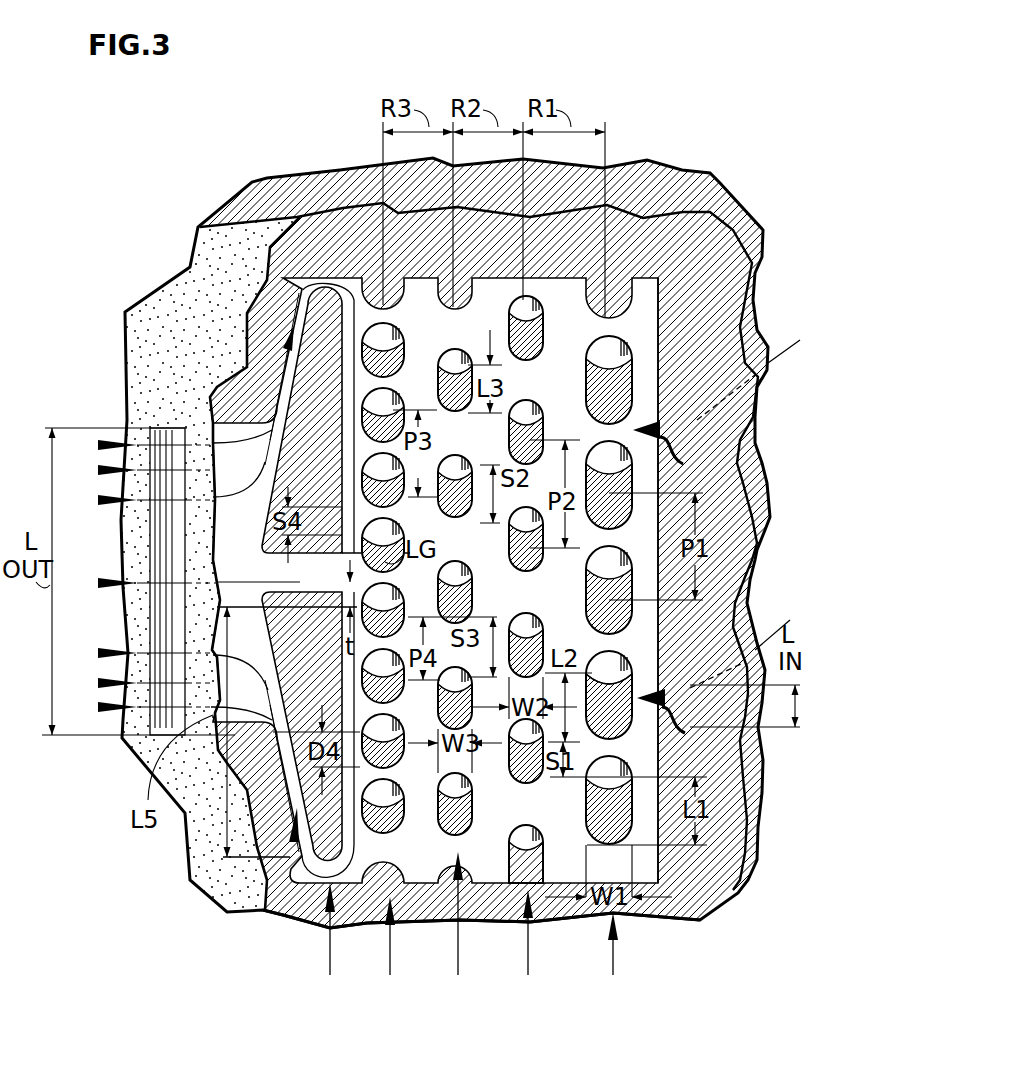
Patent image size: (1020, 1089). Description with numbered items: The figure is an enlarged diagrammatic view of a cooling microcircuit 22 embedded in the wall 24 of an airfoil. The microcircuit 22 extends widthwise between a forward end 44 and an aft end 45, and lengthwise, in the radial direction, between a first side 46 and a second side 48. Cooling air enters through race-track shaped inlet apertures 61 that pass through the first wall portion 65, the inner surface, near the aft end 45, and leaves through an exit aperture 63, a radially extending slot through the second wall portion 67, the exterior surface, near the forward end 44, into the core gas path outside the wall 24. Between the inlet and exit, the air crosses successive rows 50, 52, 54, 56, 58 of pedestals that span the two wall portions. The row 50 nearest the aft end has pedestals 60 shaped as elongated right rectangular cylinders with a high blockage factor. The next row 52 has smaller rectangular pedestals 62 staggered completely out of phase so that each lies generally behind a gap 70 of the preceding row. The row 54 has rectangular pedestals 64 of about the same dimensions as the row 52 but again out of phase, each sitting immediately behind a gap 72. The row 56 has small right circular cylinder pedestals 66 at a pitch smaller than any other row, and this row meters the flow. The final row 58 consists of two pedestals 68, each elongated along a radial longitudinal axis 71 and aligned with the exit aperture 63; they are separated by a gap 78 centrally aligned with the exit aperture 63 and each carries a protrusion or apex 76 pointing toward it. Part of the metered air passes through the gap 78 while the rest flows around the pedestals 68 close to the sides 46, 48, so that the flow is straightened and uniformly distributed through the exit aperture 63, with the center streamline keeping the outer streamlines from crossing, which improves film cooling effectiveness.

The microcircuit 22 is at (698, 132).
The wall 24 is at (253, 183).
The forward end 44 is at (262, 372).
The aft end 45 is at (663, 355).
The first side 46 is at (348, 277).
The second side 48 is at (305, 915).
The row 50 is at (609, 674).
The row 52 is at (510, 581).
The row 54 is at (455, 674).
The row 56 is at (383, 659).
The row 58 is at (328, 802).
The pedestals 60 is at (609, 695).
The inlet aperture 61 is at (683, 462).
The pedestals 62 is at (514, 832).
The exit aperture 63 is at (172, 568).
The pedestals 64 is at (472, 815).
The first wall portion 65 is at (280, 178).
The pedestals 66 is at (390, 830).
The second wall portion 67 is at (150, 378).
The pedestals 68 is at (322, 465).
The gap 70 is at (610, 648).
The longitudinal axis 71 is at (268, 303).
The gap 72 is at (528, 372).
The apex 76 is at (270, 673).
The gap 78 is at (300, 573).